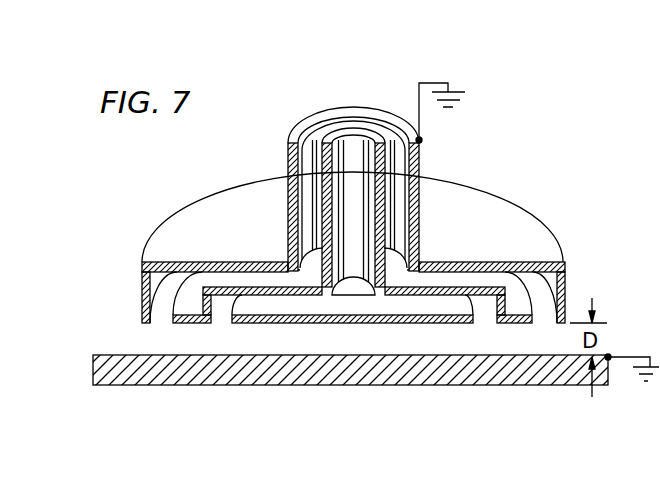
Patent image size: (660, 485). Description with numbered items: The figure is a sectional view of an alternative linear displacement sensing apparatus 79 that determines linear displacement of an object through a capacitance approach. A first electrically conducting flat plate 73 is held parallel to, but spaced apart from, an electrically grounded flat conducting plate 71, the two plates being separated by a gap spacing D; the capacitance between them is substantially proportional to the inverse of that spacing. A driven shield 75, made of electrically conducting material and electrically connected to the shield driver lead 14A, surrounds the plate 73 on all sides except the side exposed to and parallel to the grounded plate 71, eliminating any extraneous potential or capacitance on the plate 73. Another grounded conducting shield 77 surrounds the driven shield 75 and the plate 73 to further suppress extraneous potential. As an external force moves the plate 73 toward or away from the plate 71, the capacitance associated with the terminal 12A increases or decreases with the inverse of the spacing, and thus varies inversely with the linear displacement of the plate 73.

The terminal 12A is at (354, 313).
The shield driver lead 14A is at (386, 140).
The grounded flat conducting plate 71 is at (152, 383).
The first electrically conducting flat plate 73 is at (268, 323).
The driven shield 75 is at (173, 320).
The grounded shield 77 is at (565, 263).
The displacement sensing apparatus 79 is at (490, 172).